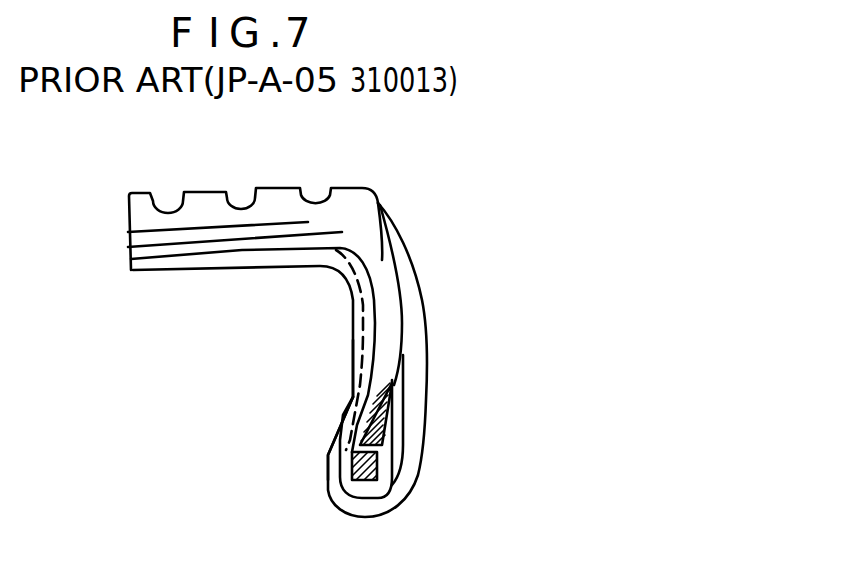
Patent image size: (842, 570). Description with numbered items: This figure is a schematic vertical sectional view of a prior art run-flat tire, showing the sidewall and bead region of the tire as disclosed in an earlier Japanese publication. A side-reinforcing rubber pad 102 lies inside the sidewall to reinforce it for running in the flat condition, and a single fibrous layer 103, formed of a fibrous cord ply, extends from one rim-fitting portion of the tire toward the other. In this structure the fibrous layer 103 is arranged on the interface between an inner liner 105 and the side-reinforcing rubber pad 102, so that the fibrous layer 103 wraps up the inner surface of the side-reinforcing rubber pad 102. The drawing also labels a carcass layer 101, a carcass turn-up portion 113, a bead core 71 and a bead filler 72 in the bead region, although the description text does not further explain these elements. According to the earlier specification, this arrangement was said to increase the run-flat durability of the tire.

The carcass layer 101 is at (242, 252).
The side-reinforcing rubber pad 102 is at (387, 287).
The fibrous layer 103 is at (350, 398).
The inner liner 105 is at (352, 360).
The carcass turn-up portion 113 is at (403, 368).
The bead core 71 is at (363, 480).
The bead filler 72 is at (382, 433).